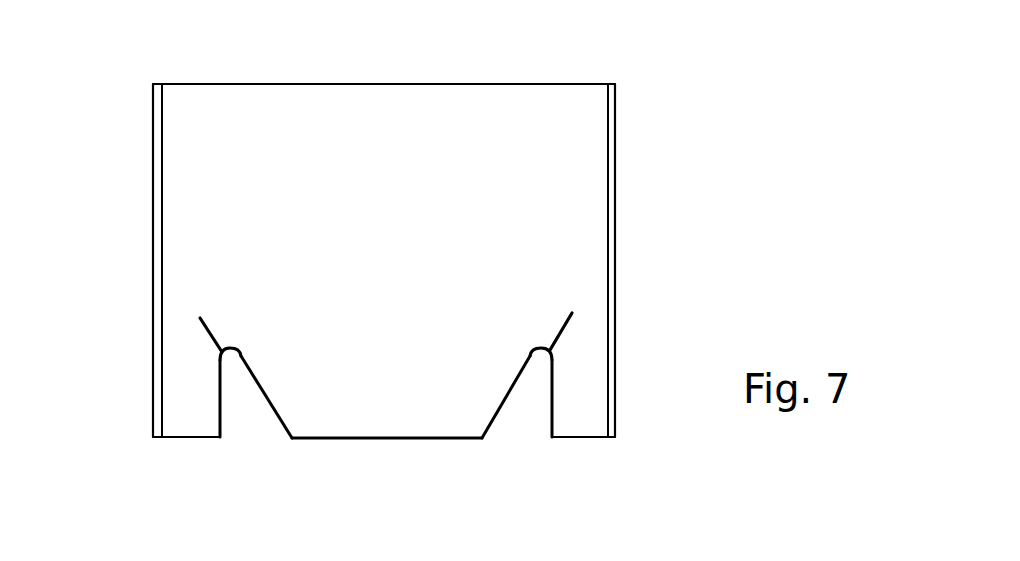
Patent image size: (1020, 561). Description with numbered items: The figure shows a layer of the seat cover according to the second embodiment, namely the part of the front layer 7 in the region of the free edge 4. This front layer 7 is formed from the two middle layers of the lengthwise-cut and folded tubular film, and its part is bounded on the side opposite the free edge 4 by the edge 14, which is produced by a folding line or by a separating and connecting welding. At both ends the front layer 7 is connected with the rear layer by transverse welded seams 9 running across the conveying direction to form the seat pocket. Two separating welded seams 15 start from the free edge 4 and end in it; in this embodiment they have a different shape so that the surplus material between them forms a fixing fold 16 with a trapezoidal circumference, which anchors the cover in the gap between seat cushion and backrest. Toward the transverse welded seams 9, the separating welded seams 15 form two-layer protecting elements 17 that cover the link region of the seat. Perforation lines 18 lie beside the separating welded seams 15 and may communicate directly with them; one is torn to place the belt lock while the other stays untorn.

The free edge 4 is at (194, 440).
The front layer 7 is at (387, 224).
The transverse welded seams 9 is at (160, 217).
The edge 14 is at (315, 84).
The separating welded seams 15 is at (221, 405).
The fixing fold 16 is at (402, 410).
The protecting elements 17 is at (188, 388).
The perforation lines 18 is at (202, 322).